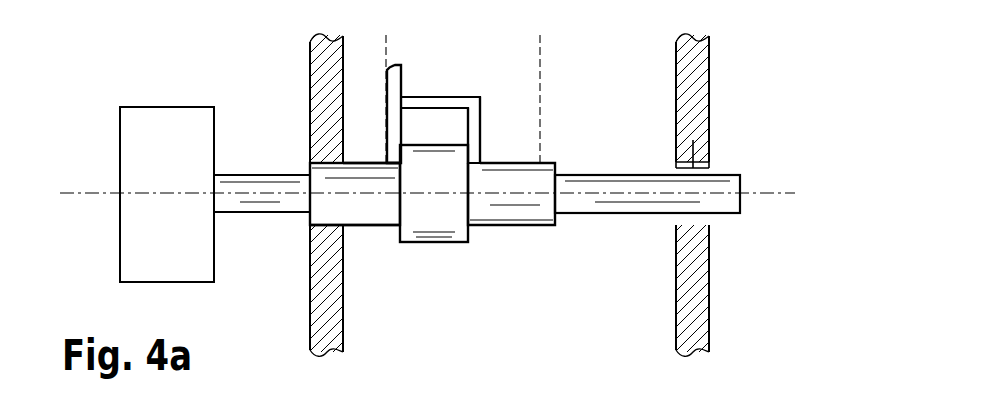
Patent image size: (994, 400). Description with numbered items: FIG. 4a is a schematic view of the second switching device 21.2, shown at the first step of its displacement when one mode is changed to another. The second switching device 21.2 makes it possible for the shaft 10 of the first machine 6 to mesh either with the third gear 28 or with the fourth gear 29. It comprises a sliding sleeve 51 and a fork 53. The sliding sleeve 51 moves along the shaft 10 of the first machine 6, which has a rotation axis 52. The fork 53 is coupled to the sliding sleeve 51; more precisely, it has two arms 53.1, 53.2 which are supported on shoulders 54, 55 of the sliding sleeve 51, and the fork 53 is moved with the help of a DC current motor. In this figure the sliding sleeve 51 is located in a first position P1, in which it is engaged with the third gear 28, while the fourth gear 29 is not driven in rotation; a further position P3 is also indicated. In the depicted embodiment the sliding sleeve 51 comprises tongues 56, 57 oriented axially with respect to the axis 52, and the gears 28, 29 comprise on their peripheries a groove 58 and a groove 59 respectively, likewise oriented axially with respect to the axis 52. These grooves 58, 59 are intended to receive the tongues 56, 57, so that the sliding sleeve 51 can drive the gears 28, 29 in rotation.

The first machine 6 is at (175, 113).
The shaft 10 is at (720, 175).
The third gear 28 is at (326, 45).
The fourth gear 29 is at (698, 64).
The sliding sleeve 51 is at (387, 228).
The rotation axis 52 is at (758, 194).
The fork 53 is at (382, 81).
The arm 53.1 is at (496, 103).
The arm 53.2 is at (400, 82).
The shoulder 54 is at (405, 147).
The shoulder 55 is at (466, 147).
The tongue 56 is at (368, 163).
The tongue 57 is at (526, 163).
The groove 58 is at (335, 165).
The groove 59 is at (693, 150).
The second switching device 21.2 is at (516, 218).
The first position P1 is at (385, 86).
The plane P3 is at (542, 86).